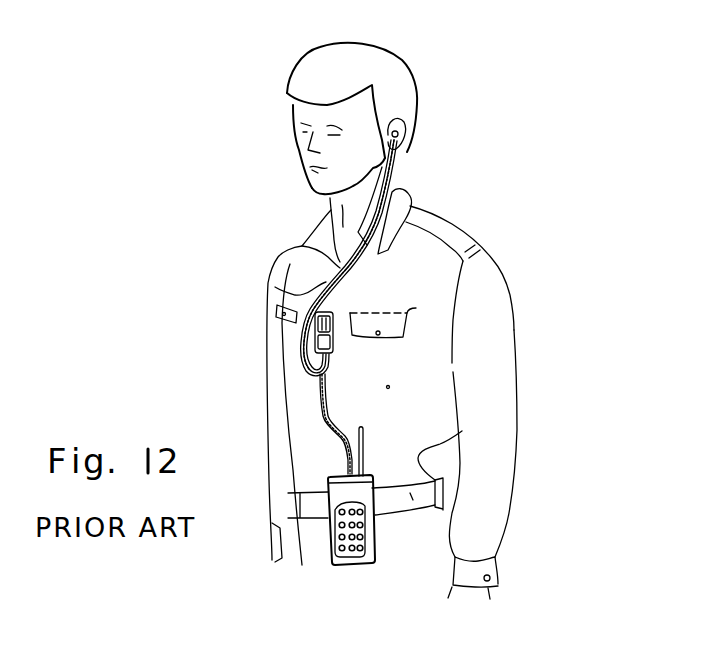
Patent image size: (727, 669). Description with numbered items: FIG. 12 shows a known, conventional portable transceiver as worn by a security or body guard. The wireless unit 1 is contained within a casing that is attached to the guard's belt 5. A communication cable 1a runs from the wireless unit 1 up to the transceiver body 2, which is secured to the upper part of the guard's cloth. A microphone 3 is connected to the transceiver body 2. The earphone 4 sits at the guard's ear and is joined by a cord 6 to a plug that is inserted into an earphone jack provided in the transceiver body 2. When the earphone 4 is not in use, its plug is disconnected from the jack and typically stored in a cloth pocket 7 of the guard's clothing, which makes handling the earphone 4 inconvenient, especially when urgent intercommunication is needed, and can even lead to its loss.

The wireless unit 1 is at (350, 548).
The communication cable 1a is at (330, 419).
The transceiver body 2 is at (313, 350).
The microphone 3 is at (275, 287).
The earphone 4 is at (398, 136).
The belt 5 is at (462, 431).
The cord 6 is at (302, 246).
The cloth pocket 7 is at (410, 311).